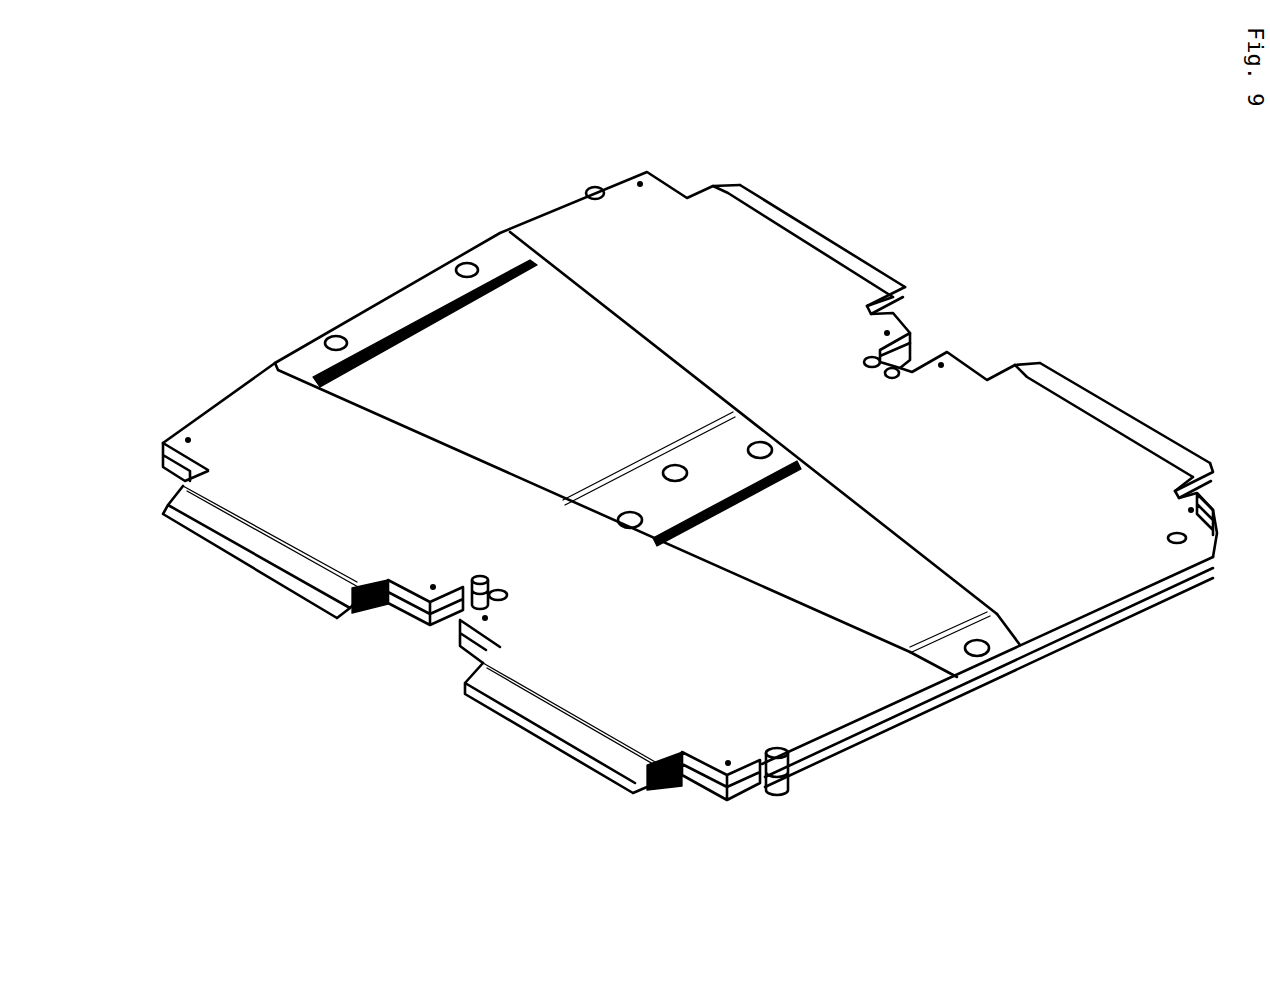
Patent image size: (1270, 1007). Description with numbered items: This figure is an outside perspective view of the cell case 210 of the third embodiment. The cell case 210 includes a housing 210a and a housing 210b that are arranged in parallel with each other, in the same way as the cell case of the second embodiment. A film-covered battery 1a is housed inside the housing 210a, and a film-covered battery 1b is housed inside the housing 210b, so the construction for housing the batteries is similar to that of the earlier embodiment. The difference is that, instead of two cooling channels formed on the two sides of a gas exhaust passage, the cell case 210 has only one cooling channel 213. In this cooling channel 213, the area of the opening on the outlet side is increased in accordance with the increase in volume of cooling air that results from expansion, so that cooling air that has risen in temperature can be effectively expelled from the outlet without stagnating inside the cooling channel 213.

The cell case 210 is at (997, 82).
The housing 210a is at (1063, 410).
The housing 210b is at (747, 220).
The cooling channel 213 is at (490, 357).
The film-covered battery 1a is at (897, 602).
The film-covered battery 1b is at (407, 358).